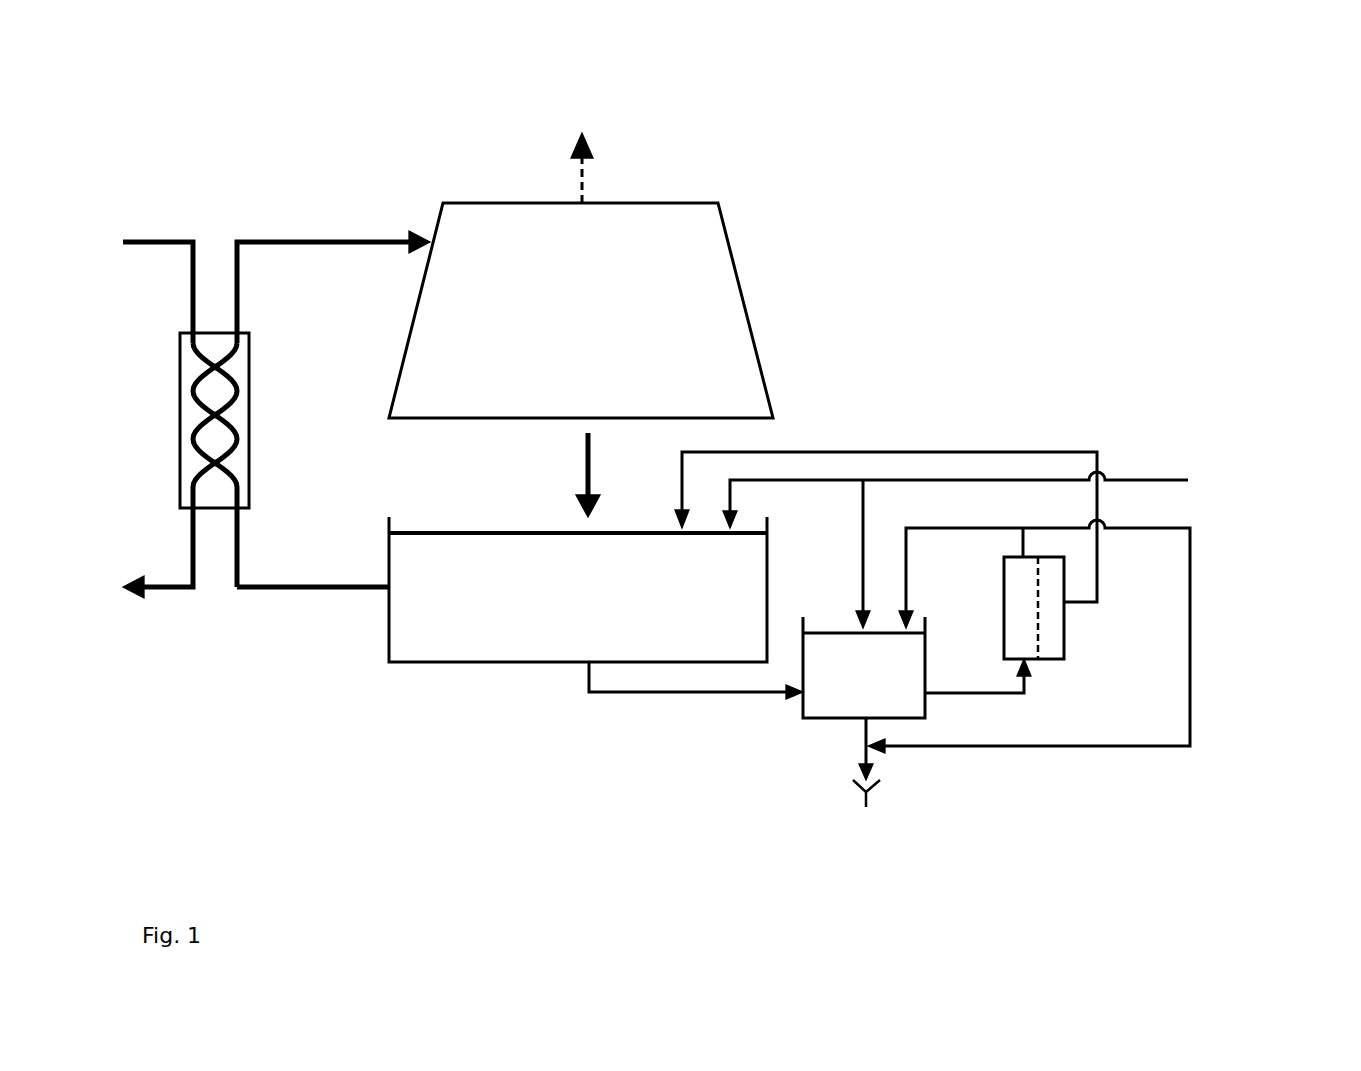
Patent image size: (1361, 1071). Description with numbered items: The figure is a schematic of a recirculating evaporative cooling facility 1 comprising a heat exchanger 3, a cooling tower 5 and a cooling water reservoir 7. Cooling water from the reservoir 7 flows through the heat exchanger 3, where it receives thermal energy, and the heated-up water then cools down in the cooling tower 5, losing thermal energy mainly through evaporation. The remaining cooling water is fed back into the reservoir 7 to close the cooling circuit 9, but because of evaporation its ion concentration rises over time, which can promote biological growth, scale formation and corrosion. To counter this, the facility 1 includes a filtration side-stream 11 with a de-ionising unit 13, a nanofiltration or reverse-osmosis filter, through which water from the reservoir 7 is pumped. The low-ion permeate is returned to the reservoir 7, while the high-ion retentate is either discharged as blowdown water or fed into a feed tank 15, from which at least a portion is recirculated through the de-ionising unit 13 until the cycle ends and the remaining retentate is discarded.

The recirculating evaporative cooling facility 1 is at (187, 75).
The heat exchanger 3 is at (180, 363).
The cooling tower 5 is at (746, 308).
The cooling water reservoir 7 is at (440, 662).
The cooling circuit 9 is at (268, 617).
The filtration side-stream 11 is at (984, 365).
The de-ionising unit 13 is at (1004, 615).
The feed tank 15 is at (838, 718).